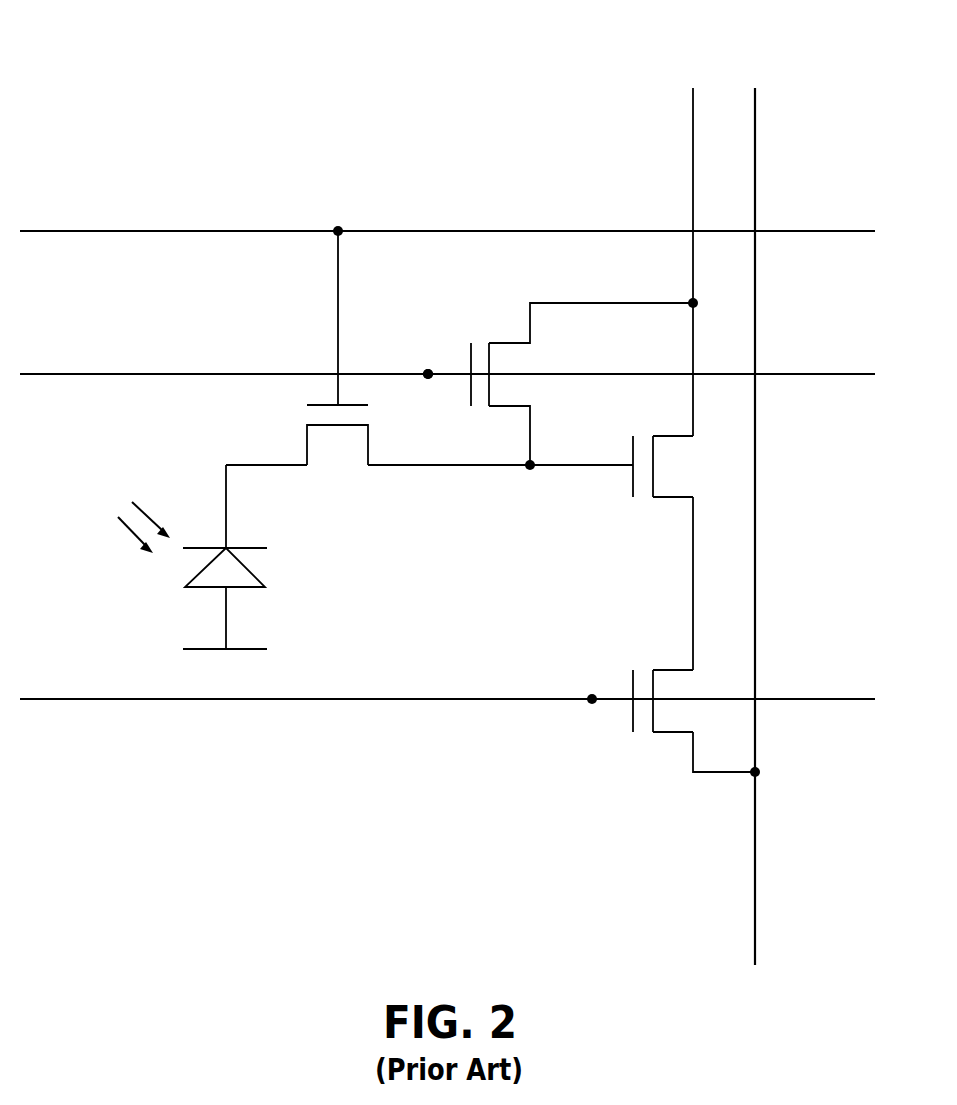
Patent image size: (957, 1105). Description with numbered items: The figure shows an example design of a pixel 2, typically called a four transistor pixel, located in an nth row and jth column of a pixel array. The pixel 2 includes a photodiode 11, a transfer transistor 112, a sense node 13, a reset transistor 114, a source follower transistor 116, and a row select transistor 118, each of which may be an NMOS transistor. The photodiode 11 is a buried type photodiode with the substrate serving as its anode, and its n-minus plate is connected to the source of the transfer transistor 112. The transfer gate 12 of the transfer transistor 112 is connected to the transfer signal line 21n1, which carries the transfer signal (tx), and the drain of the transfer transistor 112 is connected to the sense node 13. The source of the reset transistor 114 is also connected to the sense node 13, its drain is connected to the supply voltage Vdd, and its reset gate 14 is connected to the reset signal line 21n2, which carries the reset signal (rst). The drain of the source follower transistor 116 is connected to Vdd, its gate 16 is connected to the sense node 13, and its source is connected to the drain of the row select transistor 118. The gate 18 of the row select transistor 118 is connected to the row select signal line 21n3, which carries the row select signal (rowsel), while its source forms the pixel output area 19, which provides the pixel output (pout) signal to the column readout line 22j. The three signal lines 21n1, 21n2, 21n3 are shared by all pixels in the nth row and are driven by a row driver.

The pixel 2 is at (156, 68).
The photodiode 11 is at (243, 590).
The transfer gate 12 is at (358, 398).
The sense node 13 is at (530, 467).
The reset gate 14 is at (470, 395).
The gate of the source follower transistor 16 is at (630, 448).
The gate of the row select transistor 18 is at (630, 718).
The pixel output area 19 is at (760, 775).
The transfer transistor 112 is at (307, 445).
The reset transistor 114 is at (512, 343).
The source follower transistor 116 is at (674, 500).
The row select transistor 118 is at (673, 668).
The transfer signal line 21n1 is at (184, 231).
The reset signal line 21n2 is at (184, 374).
The row select signal line 21n3 is at (347, 699).
The column readout line 22j is at (757, 883).